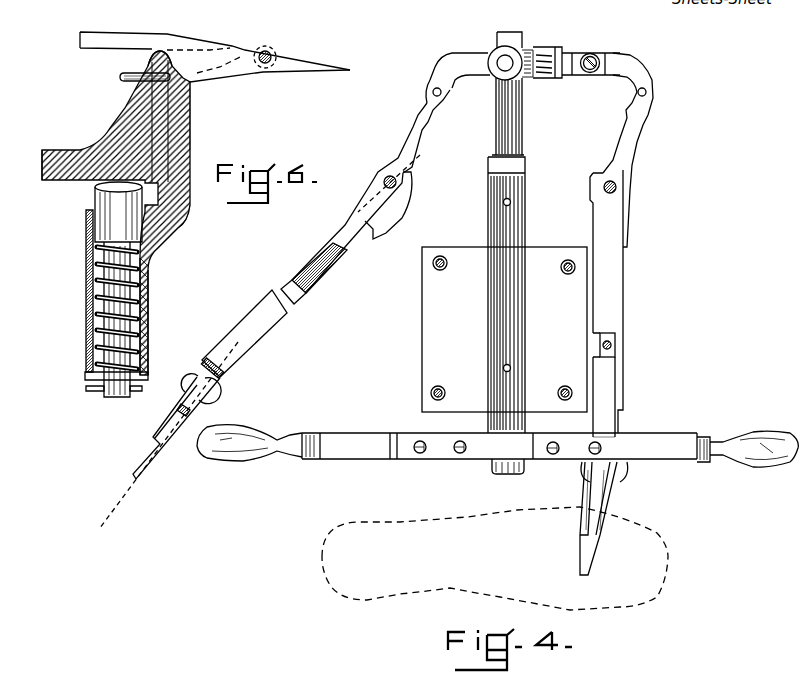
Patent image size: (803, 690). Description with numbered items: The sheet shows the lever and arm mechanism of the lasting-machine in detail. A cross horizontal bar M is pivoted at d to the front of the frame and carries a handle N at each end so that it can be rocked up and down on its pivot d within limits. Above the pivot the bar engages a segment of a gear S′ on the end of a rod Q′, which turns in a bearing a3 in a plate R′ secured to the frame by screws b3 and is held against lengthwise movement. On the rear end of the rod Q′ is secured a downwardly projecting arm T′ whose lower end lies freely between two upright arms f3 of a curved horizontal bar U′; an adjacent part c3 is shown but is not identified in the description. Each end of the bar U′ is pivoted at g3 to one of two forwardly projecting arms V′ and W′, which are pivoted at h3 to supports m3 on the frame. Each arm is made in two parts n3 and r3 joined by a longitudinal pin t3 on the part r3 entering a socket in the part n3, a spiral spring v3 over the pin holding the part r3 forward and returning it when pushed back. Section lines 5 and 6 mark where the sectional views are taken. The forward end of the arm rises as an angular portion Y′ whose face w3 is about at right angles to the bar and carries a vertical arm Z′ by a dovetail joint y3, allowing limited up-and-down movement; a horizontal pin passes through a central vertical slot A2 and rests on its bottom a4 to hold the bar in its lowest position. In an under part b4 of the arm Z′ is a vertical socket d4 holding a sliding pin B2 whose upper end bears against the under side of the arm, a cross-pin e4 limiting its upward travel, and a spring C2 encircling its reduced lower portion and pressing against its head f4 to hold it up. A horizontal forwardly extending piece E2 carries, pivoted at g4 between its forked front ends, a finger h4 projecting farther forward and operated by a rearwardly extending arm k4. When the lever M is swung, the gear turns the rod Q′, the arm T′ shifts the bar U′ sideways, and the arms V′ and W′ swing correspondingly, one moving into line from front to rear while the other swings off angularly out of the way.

In FIG. 6, the arm k4 is at (135, 24).
In FIG. 6, the horizontal forwardly-extending piece E2 is at (233, 62).
In FIG. 6, the pivot g4 is at (272, 51).
In FIG. 6, the finger h4 is at (305, 70).
In FIG. 4, the finger h4 is at (150, 468).
In FIG. 6, the central vertical slot A2 is at (146, 62).
In FIG. 6, the vertical arm Z′ is at (120, 77).
In FIG. 6, the angular portion Y′ is at (136, 104).
In FIG. 6, the bottom of the slot a4 is at (160, 100).
In FIG. 6, the dovetail joint y3 is at (160, 127).
In FIG. 6, the arm V′ is at (73, 148).
In FIG. 4, the arm V′ is at (404, 150).
In FIG. 6, the face w3 is at (122, 126).
In FIG. 6, the vertical socket d4 is at (147, 278).
In FIG. 6, the under part b4 is at (154, 285).
In FIG. 6, the head of the pin f4 is at (87, 240).
In FIG. 4, the head of the pin f4 is at (222, 397).
In FIG. 6, the pin B2 is at (113, 303).
In FIG. 4, the pin B2 is at (192, 372).
In FIG. 6, the spring C2 is at (95, 327).
In FIG. 6, the cross-pin e4 is at (92, 395).
In FIG. 4, the arm T′ is at (545, 48).
In FIG. 4, the upright arms f3 is at (577, 52).
In FIG. 4, the pivot g3 is at (433, 92).
In FIG. 4, the curved horizontal bar U′ is at (477, 68).
In FIG. 4, the sleeve c3 is at (550, 73).
In FIG. 4, the rod Q′ is at (523, 139).
In FIG. 4, the arm W′ is at (628, 148).
In FIG. 4, the pivot h3 is at (620, 187).
In FIG. 4, the supports m3 is at (624, 217).
In FIG. 4, the section line 5 5 is at (388, 184).
In FIG. 4, the arm part n3 is at (617, 277).
In FIG. 4, the spiral spring v3 is at (333, 268).
In FIG. 4, the longitudinal projecting pin t3 is at (618, 345).
In FIG. 4, the arm part r3 is at (607, 383).
In FIG. 4, the section line 6 6 is at (166, 436).
In FIG. 4, the bearing a3 is at (507, 318).
In FIG. 4, the screws b3 is at (448, 264).
In FIG. 4, the plate R′ is at (580, 315).
In FIG. 4, the cross horizontal bar M is at (378, 457).
In FIG. 4, the handle N is at (238, 458).
In FIG. 4, the segment of a gear S′ is at (472, 462).
In FIG. 4, the pivot d is at (500, 474).